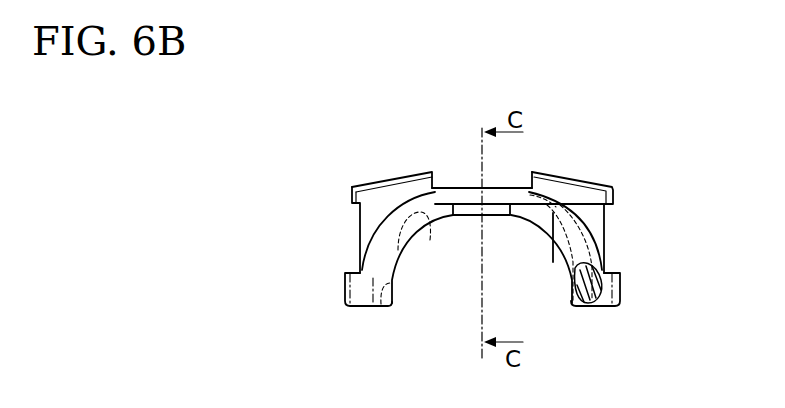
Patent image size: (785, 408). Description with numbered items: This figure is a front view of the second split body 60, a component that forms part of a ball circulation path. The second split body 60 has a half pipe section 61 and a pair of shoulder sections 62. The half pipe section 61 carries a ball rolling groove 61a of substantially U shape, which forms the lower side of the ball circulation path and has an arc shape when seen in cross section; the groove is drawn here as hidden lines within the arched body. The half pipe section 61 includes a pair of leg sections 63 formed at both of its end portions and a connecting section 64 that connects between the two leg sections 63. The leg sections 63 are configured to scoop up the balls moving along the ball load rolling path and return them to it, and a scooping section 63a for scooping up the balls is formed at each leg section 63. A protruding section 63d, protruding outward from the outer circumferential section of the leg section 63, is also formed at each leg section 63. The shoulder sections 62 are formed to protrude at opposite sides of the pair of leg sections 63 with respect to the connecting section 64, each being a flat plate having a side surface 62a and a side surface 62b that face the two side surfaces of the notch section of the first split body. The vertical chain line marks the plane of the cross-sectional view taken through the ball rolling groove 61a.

The second split body 60 is at (360, 238).
The half pipe section 61 is at (448, 228).
The ball rolling groove 61a is at (430, 240).
The shoulder section 62 is at (386, 166).
The side surface 62a is at (437, 180).
The side surface 62b is at (397, 190).
The leg section 63 is at (336, 283).
The scooping section 63a is at (375, 307).
The protruding section 63d is at (343, 297).
The connecting section 64 is at (497, 226).